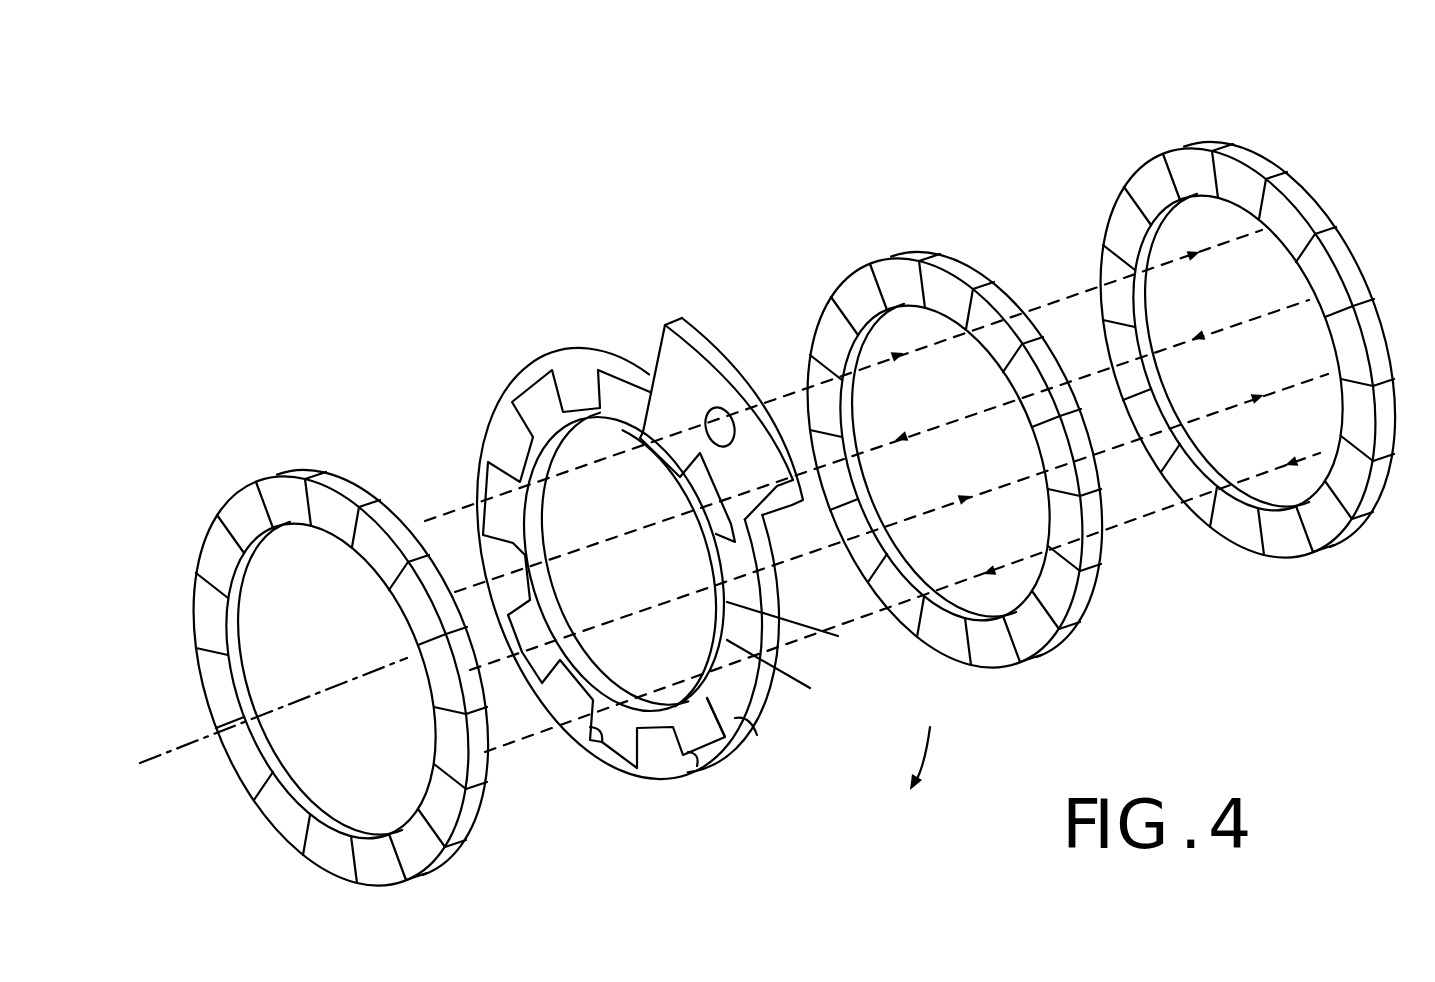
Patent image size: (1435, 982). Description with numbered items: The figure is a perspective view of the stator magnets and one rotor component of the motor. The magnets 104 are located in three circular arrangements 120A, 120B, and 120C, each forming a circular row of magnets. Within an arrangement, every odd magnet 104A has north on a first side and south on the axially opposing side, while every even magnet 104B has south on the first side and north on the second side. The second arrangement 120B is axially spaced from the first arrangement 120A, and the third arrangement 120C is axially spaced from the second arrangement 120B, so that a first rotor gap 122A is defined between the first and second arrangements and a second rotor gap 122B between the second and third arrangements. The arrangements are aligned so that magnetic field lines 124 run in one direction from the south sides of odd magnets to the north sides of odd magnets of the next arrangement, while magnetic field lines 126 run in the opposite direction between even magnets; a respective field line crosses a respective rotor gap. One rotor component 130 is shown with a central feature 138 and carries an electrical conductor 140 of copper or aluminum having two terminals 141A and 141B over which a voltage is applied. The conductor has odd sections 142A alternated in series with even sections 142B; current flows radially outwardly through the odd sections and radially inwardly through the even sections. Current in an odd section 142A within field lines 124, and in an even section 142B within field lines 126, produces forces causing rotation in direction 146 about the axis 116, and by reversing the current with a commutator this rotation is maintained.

The magnets 104 is at (1281, 546).
The odd magnet 104A is at (373, 881).
The even magnet 104B is at (425, 860).
The axis 116 is at (150, 757).
The first arrangement 120A is at (345, 653).
The second arrangement 120B is at (1031, 431).
The third arrangement 120C is at (1208, 125).
The first rotor gap 122A is at (694, 526).
The second rotor gap 122B is at (1088, 180).
The magnetic field lines 124 is at (1262, 391).
The magnetic field lines 126 is at (1254, 475).
The rotor component 130 is at (571, 376).
The central opening 138 is at (631, 699).
The conductor 140 is at (802, 690).
The terminal 141A is at (799, 664).
The terminal 141B is at (838, 636).
The odd sections 142A is at (742, 730).
The even sections 142B is at (691, 756).
The direction 146 is at (942, 756).